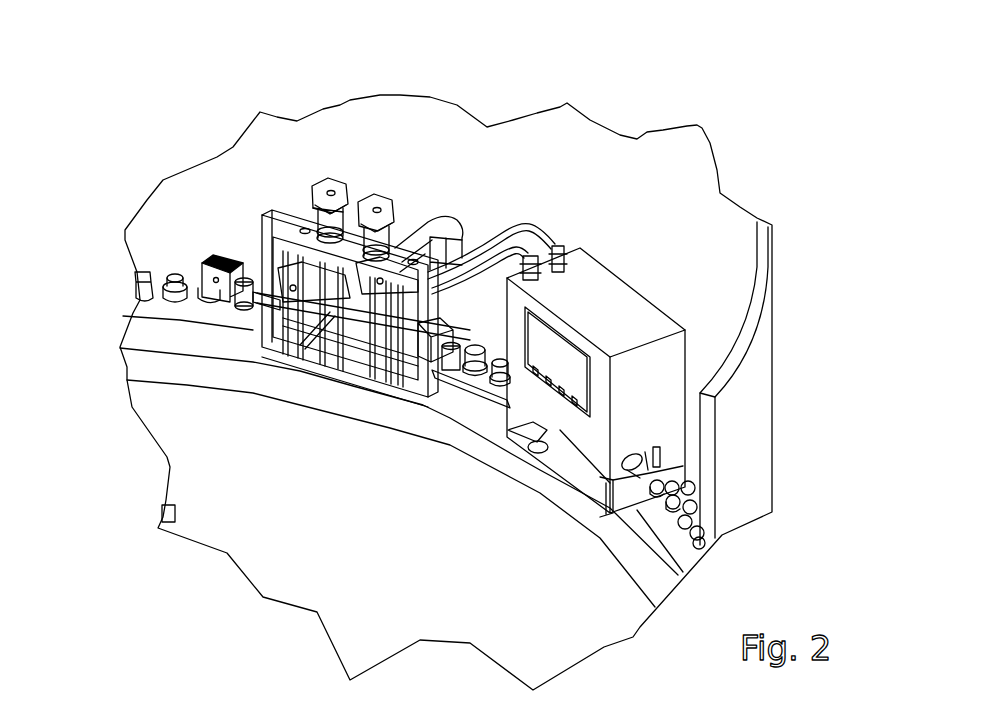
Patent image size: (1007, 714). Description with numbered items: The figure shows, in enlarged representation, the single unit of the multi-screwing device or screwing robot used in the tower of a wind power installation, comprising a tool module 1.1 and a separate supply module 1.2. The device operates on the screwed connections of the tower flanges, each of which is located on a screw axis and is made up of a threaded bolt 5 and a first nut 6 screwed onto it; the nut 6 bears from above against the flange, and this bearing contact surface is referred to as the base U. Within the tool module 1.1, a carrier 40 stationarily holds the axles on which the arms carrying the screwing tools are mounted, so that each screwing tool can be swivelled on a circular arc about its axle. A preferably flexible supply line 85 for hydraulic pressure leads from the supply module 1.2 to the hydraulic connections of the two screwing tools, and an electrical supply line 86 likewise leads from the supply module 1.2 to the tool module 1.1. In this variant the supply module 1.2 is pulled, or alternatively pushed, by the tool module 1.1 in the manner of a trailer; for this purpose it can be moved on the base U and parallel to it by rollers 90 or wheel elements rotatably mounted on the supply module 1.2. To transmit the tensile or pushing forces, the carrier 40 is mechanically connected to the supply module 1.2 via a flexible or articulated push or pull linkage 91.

The tool module 1.1 is at (385, 177).
The supply module 1.2 is at (644, 279).
The threaded bolt 5 is at (172, 268).
The first nut 6 is at (180, 302).
The carrier 40 is at (263, 248).
The supply line 85 is at (490, 240).
The electrical supply line 86 is at (530, 227).
The rollers 90 is at (534, 450).
The push or pull linkage 91 is at (470, 385).